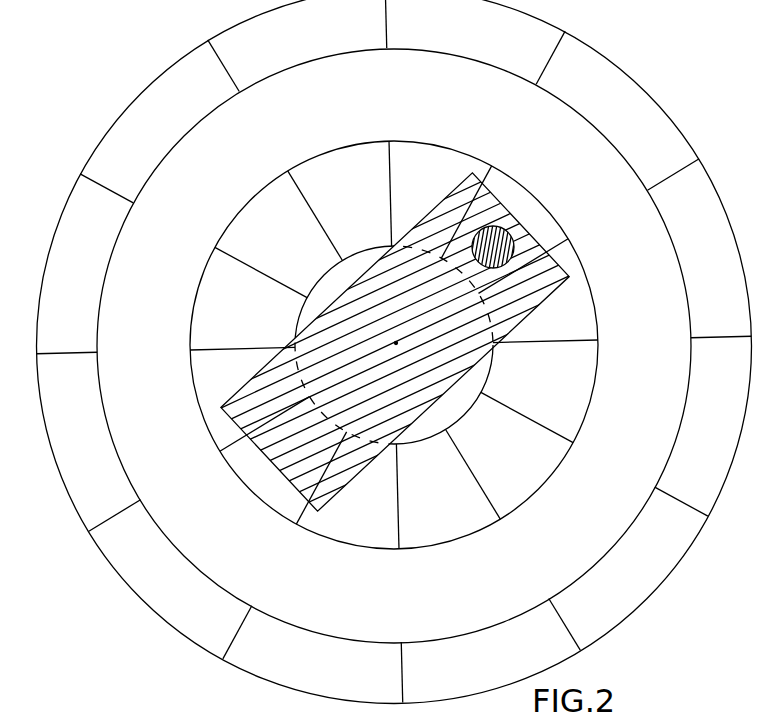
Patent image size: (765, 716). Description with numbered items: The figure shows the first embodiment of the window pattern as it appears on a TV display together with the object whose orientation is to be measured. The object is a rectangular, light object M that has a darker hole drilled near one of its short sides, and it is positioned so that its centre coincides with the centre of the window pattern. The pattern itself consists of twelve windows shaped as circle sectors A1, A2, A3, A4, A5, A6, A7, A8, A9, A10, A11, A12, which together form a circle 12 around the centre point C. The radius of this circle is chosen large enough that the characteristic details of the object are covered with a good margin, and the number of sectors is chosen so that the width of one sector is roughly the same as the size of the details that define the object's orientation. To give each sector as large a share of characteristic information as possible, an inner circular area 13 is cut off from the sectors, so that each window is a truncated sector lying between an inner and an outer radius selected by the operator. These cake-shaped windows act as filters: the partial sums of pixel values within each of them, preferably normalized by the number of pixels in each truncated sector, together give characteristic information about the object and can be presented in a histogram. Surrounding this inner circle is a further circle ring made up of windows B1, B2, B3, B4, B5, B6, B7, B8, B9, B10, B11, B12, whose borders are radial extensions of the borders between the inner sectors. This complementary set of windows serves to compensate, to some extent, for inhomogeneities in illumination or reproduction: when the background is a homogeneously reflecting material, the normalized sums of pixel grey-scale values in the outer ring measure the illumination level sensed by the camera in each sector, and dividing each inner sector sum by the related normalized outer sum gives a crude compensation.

The circle 12 is at (455, 541).
The inner circular area 13 is at (481, 384).
The centre point C is at (397, 343).
The rectangular object M is at (488, 216).
The circle sector window A1 is at (242, 320).
The circle sector window A2 is at (260, 264).
The circle sector window A3 is at (327, 215).
The circle sector window A4 is at (410, 193).
The circle sector window A5 is at (496, 211).
The circle sector window A6 is at (533, 278).
The circle sector window A7 is at (546, 359).
The circle sector window A8 is at (527, 436).
The circle sector window A9 is at (459, 475).
The circle sector window A10 is at (370, 497).
The circle sector window A11 is at (292, 479).
The circle sector window A12 is at (251, 403).
The outer ring window B1 is at (66, 292).
The outer ring window B2 is at (129, 149).
The outer ring window B3 is at (271, 52).
The outer ring window B4 is at (429, 24).
The outer ring window B5 is at (582, 77).
The outer ring window B6 is at (680, 206).
The outer ring window B7 is at (722, 375).
The outer ring window B8 is at (667, 531).
The outer ring window B9 is at (523, 639).
The outer ring window B10 is at (346, 673).
The outer ring window B11 is at (197, 606).
The outer ring window B12 is at (101, 463).